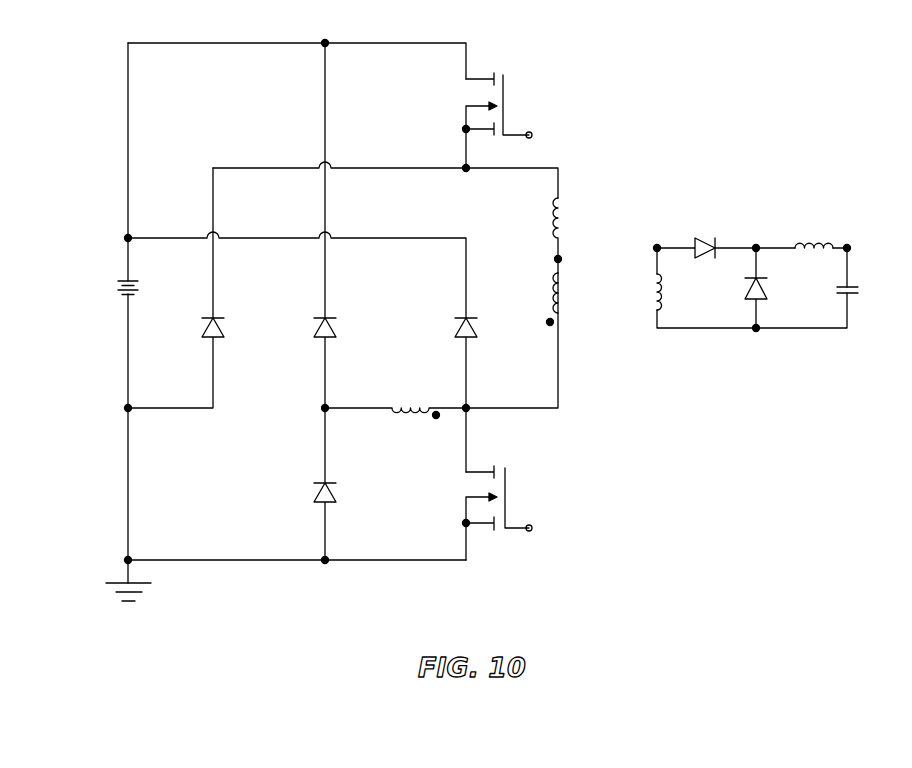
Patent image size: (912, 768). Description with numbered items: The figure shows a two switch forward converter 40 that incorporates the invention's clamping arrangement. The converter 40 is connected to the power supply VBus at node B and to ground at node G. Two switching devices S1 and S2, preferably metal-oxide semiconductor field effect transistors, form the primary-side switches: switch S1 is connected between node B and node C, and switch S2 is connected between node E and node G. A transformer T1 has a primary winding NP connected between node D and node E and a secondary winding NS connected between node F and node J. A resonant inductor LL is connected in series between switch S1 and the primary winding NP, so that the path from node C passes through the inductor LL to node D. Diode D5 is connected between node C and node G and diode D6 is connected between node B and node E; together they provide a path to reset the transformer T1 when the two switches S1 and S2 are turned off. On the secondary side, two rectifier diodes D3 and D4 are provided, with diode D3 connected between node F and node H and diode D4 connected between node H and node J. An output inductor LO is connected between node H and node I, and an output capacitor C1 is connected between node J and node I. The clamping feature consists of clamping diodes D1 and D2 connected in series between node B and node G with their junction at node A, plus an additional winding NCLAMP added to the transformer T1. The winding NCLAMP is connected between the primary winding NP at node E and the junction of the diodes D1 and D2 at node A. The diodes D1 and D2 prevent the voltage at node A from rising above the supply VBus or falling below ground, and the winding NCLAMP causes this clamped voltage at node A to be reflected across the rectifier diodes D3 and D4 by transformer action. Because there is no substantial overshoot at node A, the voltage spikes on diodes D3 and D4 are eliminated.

The two switch forward converter 40 is at (758, 404).
The power supply VBus is at (88, 284).
The node B is at (324, 165).
The node C is at (478, 156).
The node D is at (568, 260).
The node A is at (334, 426).
The node E is at (477, 426).
The node G is at (320, 578).
The node F is at (648, 239).
The node H is at (758, 239).
The node I is at (858, 239).
The node J is at (750, 346).
The switch S1 is at (501, 120).
The switch S2 is at (500, 513).
The clamping diode D1 is at (309, 400).
The clamping diode D2 is at (309, 521).
The rectifier diode D3 is at (707, 237).
The rectifier diode D4 is at (775, 294).
The diode D5 is at (176, 288).
The diode D6 is at (450, 395).
The resonant inductor LL is at (571, 235).
The primary winding NP is at (530, 340).
The secondary winding NS is at (641, 292).
The transformer T1 is at (611, 293).
The clamp winding NCLAMP is at (395, 428).
The inductor LO is at (814, 232).
The output capacitor C1 is at (866, 298).